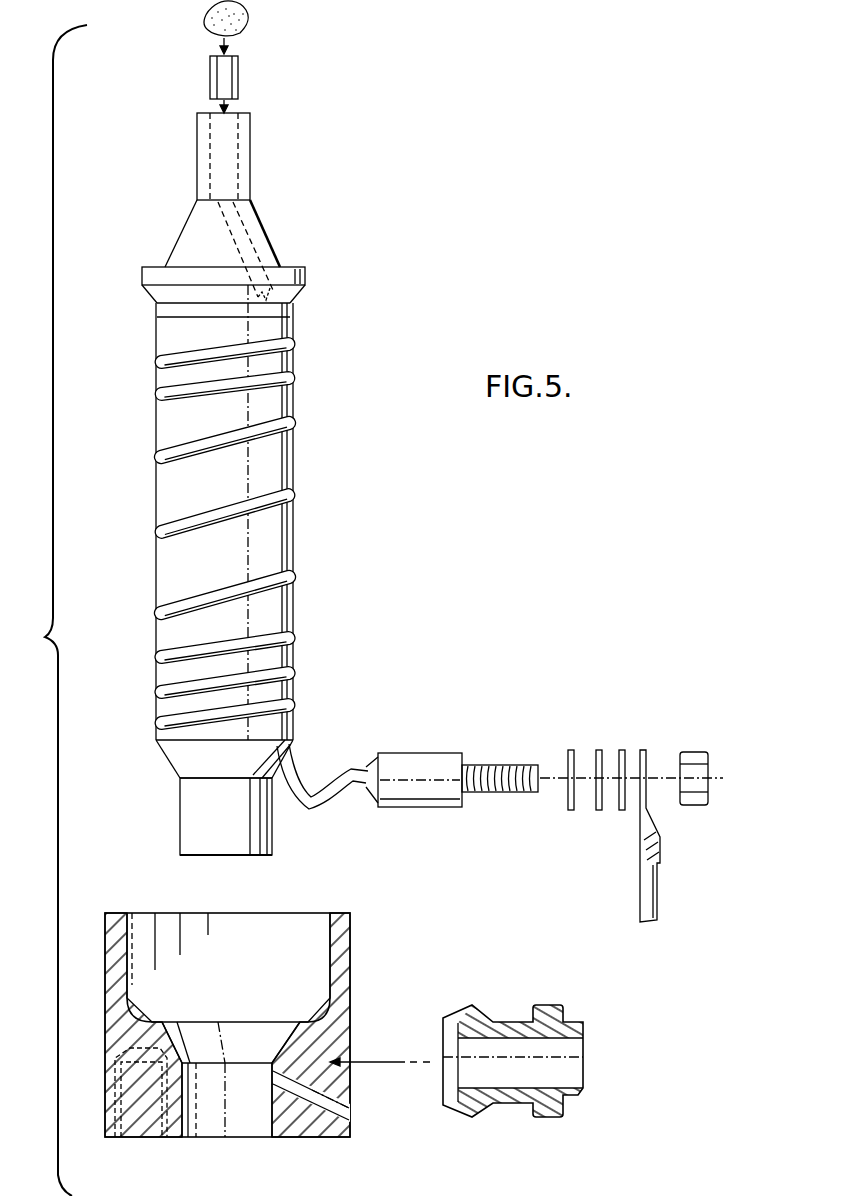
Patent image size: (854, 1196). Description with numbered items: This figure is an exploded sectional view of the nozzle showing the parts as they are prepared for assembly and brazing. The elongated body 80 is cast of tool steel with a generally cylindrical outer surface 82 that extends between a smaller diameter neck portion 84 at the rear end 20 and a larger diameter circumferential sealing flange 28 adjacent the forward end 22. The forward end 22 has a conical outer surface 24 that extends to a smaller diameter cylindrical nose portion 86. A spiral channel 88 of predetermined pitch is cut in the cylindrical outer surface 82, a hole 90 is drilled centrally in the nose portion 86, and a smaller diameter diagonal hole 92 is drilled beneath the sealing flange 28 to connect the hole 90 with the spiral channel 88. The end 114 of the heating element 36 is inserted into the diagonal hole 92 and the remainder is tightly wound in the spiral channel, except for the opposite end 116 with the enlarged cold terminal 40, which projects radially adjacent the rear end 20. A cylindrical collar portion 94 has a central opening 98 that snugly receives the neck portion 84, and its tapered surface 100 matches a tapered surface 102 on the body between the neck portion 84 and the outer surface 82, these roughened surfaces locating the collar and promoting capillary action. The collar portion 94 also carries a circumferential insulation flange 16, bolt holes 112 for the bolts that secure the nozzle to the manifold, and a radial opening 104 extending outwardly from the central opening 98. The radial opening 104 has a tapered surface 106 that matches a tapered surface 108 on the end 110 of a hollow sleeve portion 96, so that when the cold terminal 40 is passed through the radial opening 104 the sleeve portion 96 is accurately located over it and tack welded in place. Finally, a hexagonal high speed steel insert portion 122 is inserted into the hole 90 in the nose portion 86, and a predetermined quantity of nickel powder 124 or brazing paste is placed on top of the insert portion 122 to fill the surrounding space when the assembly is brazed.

The nickel powder 124 is at (254, 34).
The insert portion 122 is at (236, 76).
The hole 90 is at (242, 130).
The cylindrical nose portion 86 is at (250, 155).
The end of heating element 114 is at (236, 214).
The forward end 22 is at (259, 221).
The conical outer surface 24 is at (268, 238).
The diagonal hole 92 is at (256, 257).
The circumferential sealing flange 28 is at (302, 278).
The heating element 36 is at (290, 424).
The spiral channel 88 is at (290, 494).
The elongated body 80 is at (276, 537).
The cylindrical outer surface 82 is at (293, 598).
The tapered surface 102 is at (165, 755).
The neck portion 84 is at (273, 851).
The rear end 20 is at (223, 856).
The end of heating element with cold terminal 116 is at (354, 768).
The cold terminal 40 is at (448, 757).
The insulation flange 16 is at (352, 932).
The tapered surface 100 is at (283, 1044).
The radial opening 104 is at (320, 1100).
The tapered surface 106 is at (312, 1120).
The bolt holes 112 is at (135, 1145).
The central opening 98 is at (240, 1122).
The collar portion 94 is at (290, 1130).
The end of sleeve portion 110 is at (443, 1037).
The tapered surface 108 is at (455, 1112).
The hollow sleeve portion 96 is at (565, 1112).